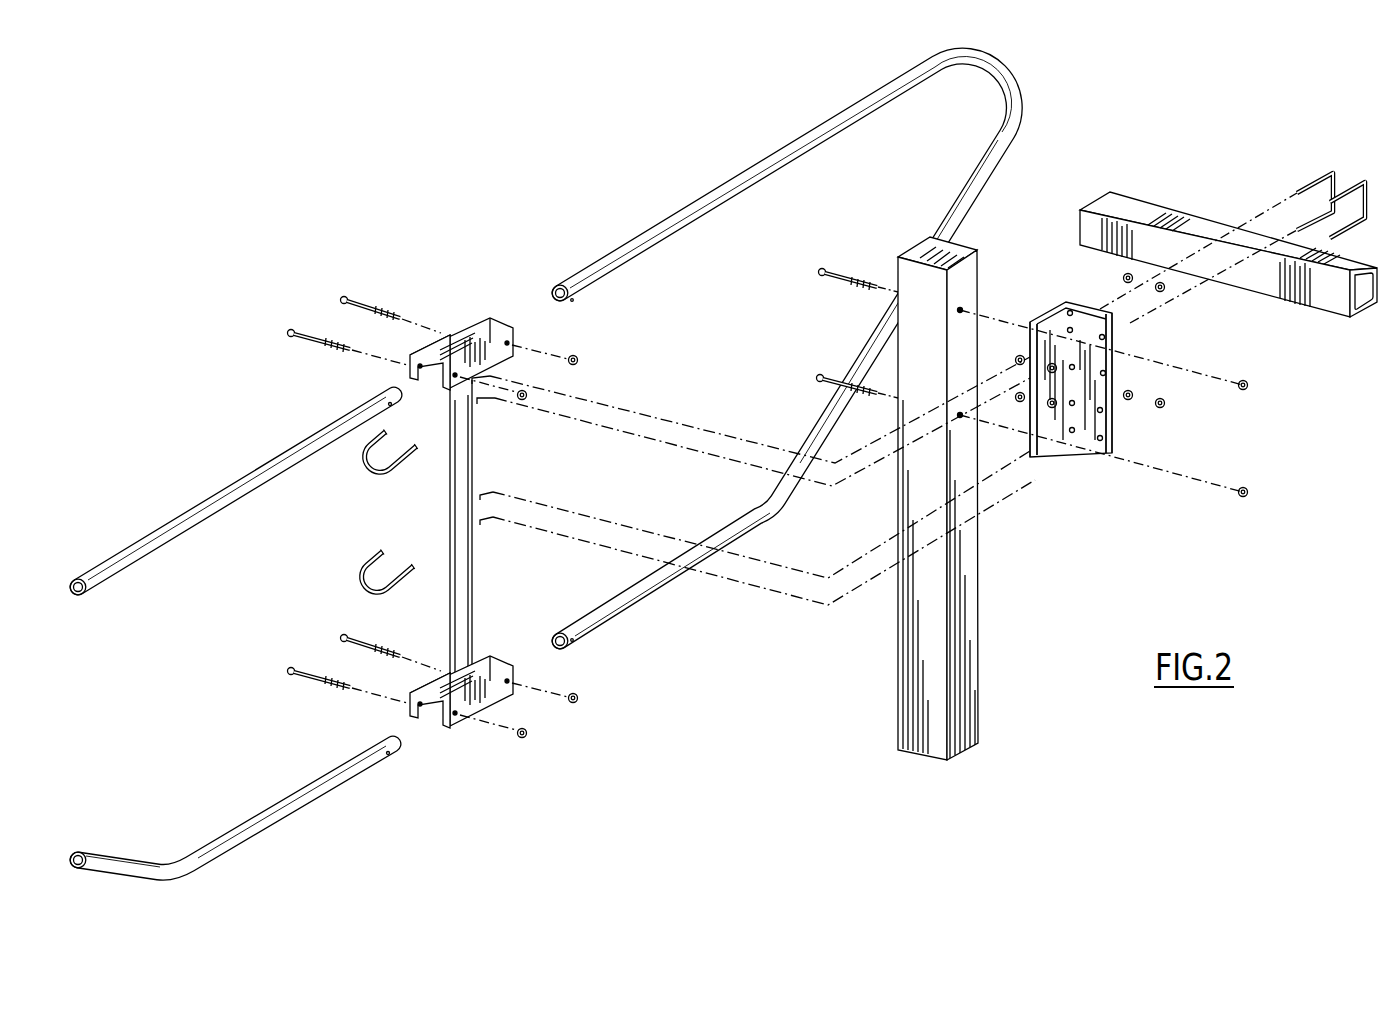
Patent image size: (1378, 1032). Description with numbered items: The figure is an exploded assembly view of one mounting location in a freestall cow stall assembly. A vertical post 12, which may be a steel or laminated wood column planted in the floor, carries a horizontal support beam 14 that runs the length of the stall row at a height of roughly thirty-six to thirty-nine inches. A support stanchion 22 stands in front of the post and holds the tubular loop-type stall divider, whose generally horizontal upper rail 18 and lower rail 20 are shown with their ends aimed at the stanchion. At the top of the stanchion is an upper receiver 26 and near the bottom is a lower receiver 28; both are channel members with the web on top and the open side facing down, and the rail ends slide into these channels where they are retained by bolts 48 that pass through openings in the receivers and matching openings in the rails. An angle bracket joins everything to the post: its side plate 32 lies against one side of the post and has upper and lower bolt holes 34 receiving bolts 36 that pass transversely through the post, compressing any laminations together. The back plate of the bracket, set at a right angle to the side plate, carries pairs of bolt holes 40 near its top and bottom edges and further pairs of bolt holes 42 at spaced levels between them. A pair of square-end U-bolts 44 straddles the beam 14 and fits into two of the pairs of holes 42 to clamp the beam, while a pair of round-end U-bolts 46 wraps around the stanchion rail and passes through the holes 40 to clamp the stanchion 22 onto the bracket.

The vertical post 12 is at (971, 635).
The horizontal support beam 14 is at (1127, 193).
The upper rail 18 is at (715, 192).
The lower rail 20 is at (627, 617).
The support stanchion 22 is at (428, 490).
The upper receiver 26 is at (480, 317).
The lower receiver 28 is at (457, 727).
The side plate 32 is at (1028, 457).
The bolt holes 34 is at (1047, 333).
The bolts 36 is at (820, 374).
The bolt holes 40 is at (1092, 320).
The bolt holes 42 is at (1124, 395).
The square-end U-bolts 44 is at (1365, 186).
The round-end U-bolts 46 is at (357, 467).
The bolts 48 is at (290, 331).